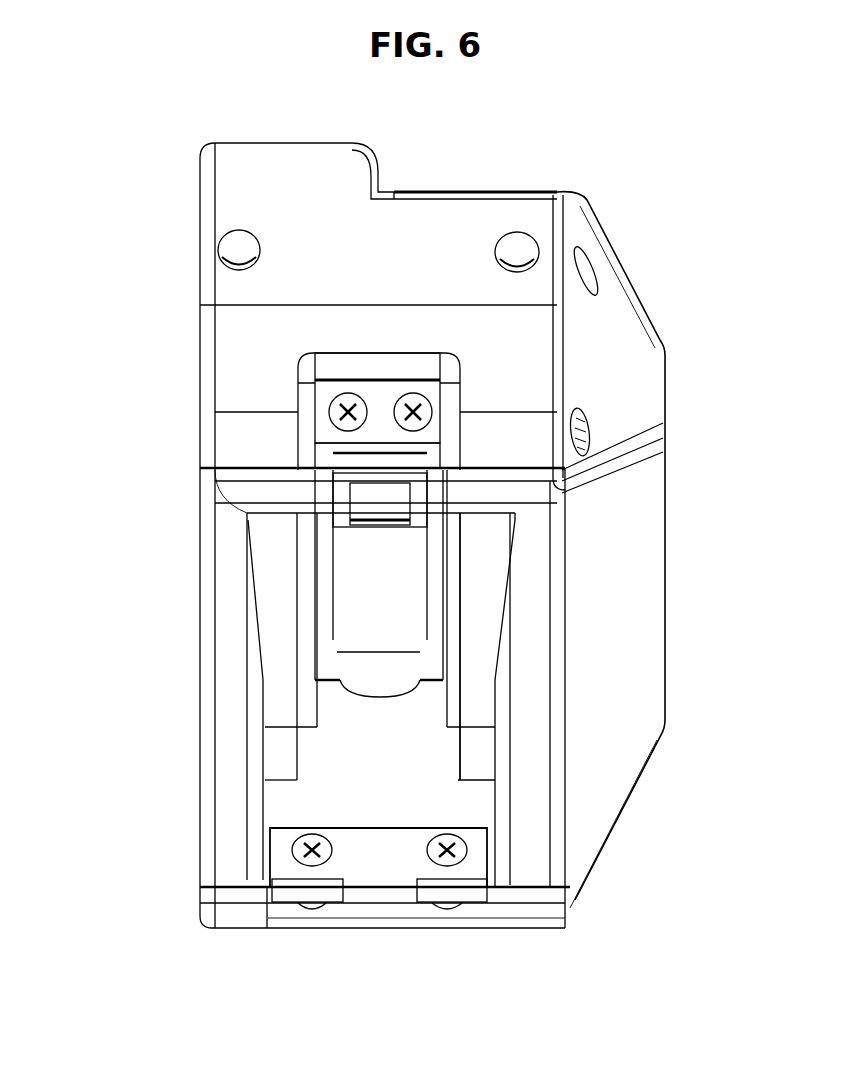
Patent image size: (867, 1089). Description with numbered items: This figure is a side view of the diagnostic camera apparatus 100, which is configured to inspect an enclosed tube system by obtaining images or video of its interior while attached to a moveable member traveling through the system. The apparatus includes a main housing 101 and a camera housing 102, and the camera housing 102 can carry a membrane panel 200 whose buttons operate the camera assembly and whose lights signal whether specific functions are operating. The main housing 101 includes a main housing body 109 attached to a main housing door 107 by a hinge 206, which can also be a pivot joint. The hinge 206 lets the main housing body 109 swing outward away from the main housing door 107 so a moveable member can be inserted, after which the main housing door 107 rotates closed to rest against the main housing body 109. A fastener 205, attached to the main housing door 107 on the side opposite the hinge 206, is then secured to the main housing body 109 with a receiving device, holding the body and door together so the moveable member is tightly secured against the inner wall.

The diagnostic camera apparatus 100 is at (707, 161).
The main housing 101 is at (197, 523).
The camera housing 102 is at (243, 207).
The main housing door 107 is at (330, 800).
The main housing body 109 is at (528, 376).
The membrane panel 200 is at (460, 228).
The fastener 205 is at (372, 609).
The hinge 206 is at (368, 862).